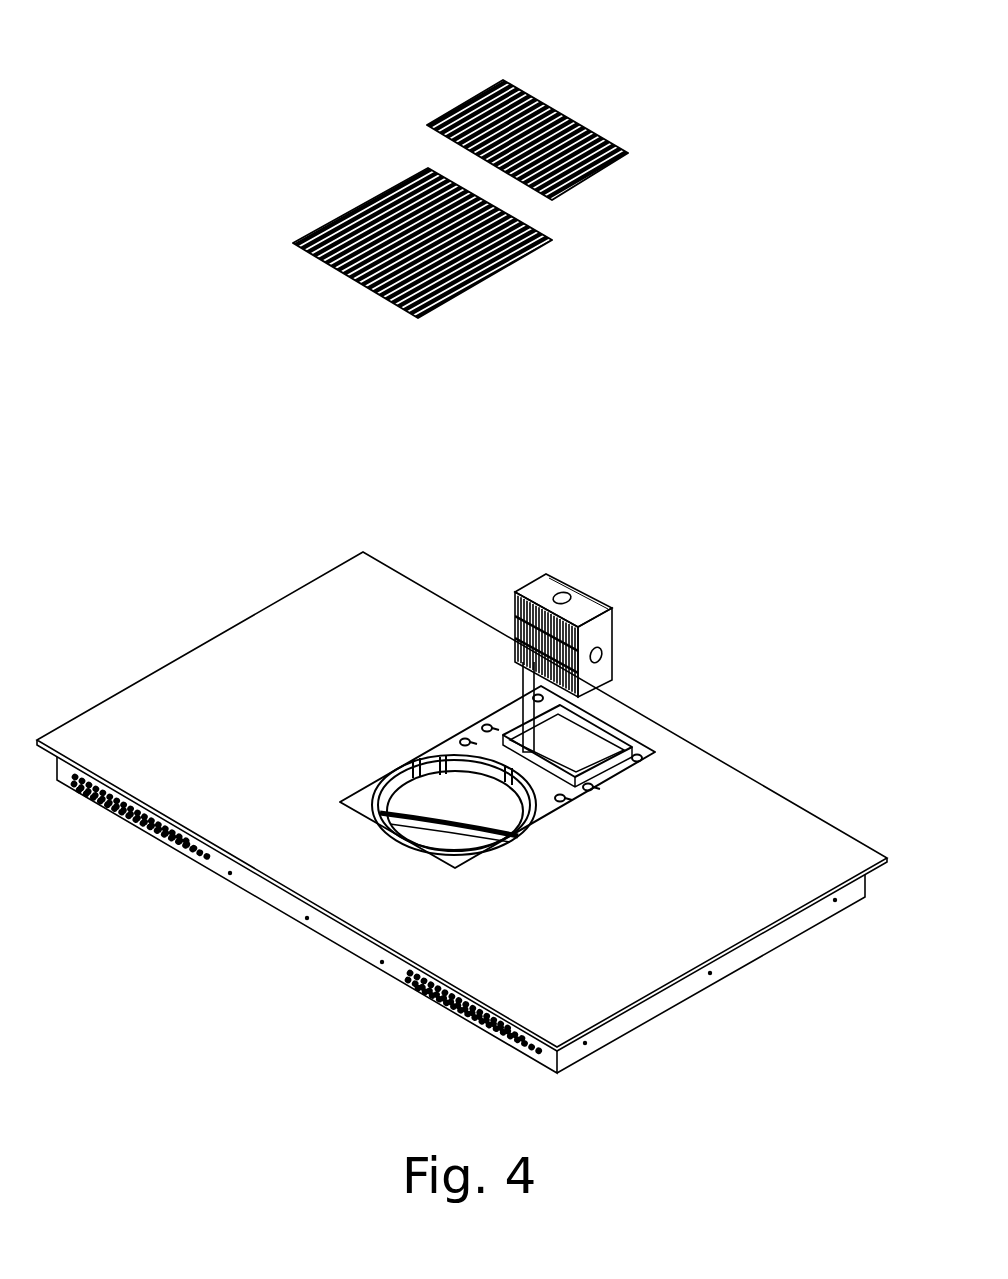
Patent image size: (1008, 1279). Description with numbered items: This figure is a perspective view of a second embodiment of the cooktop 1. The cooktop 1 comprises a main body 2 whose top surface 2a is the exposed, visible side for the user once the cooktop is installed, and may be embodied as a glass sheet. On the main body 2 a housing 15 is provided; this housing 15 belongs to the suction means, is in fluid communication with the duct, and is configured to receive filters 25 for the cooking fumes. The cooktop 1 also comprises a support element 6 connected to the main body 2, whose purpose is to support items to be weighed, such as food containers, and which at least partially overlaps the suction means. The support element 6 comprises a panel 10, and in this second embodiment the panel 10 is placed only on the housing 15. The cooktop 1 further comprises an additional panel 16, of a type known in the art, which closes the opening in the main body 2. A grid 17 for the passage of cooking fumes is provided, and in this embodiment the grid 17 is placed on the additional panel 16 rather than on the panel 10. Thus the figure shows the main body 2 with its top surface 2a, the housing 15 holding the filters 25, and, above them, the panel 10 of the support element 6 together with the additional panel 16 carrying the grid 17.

The cooktop 1 is at (260, 288).
The main body 2 is at (244, 616).
The top surface 2a is at (762, 807).
The support element 6 is at (600, 125).
The panel 10 is at (528, 102).
The housing 15 is at (608, 750).
The additional panel 16 is at (383, 304).
The grid 17 is at (467, 258).
The filters 25 is at (555, 582).